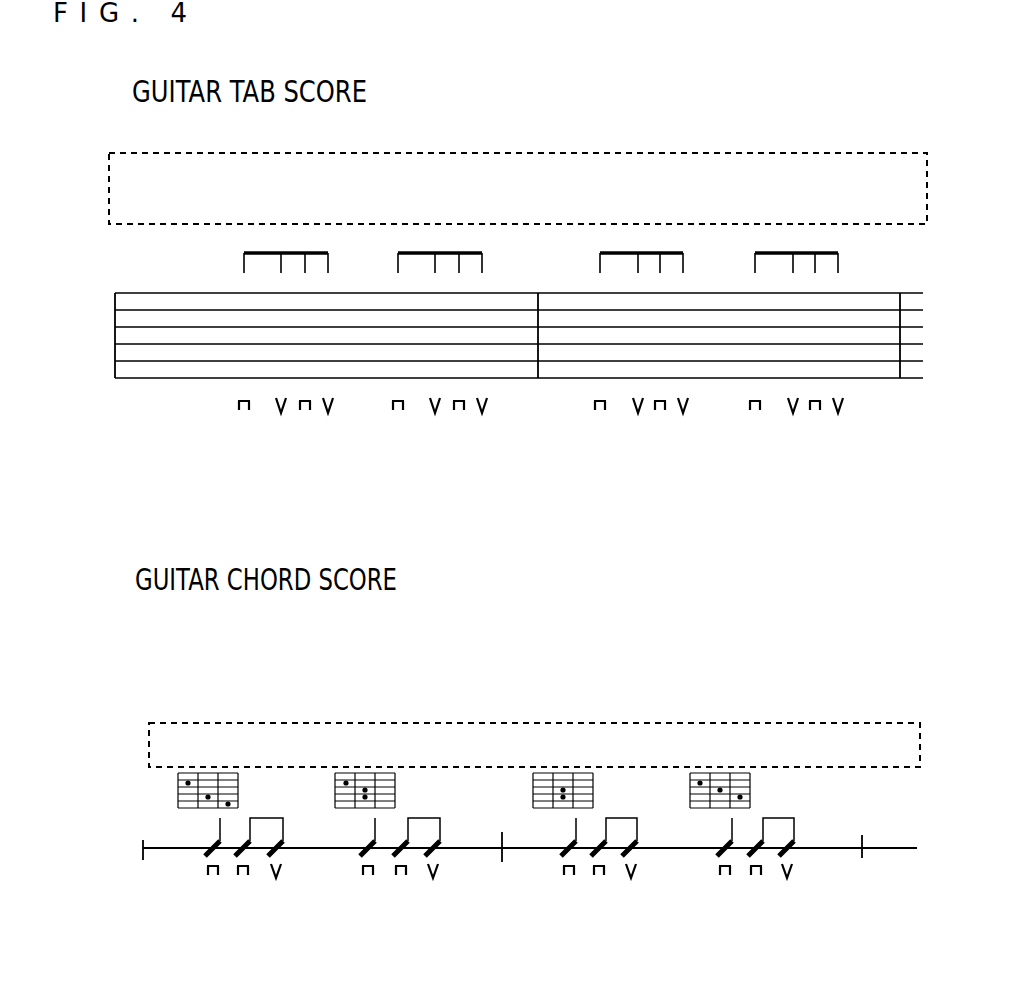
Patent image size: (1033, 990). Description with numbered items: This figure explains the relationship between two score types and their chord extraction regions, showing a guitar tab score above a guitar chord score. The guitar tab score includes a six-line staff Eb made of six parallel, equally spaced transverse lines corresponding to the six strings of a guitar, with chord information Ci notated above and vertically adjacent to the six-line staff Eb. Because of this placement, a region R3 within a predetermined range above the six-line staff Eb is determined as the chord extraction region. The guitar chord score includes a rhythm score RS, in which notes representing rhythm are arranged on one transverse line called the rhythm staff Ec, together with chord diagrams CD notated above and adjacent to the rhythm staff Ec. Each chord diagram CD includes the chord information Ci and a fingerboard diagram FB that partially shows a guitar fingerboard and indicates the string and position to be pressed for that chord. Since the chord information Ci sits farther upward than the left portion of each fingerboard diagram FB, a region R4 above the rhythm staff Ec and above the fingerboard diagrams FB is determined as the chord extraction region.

The region R3 is at (868, 152).
The chord information Ci is at (263, 180).
The six-line staff Eb is at (876, 378).
The region R4 is at (893, 723).
The chord diagram CD is at (214, 668).
The fingerboard diagram FB is at (178, 786).
The rhythm score RS is at (170, 882).
The rhythm staff Ec is at (880, 848).